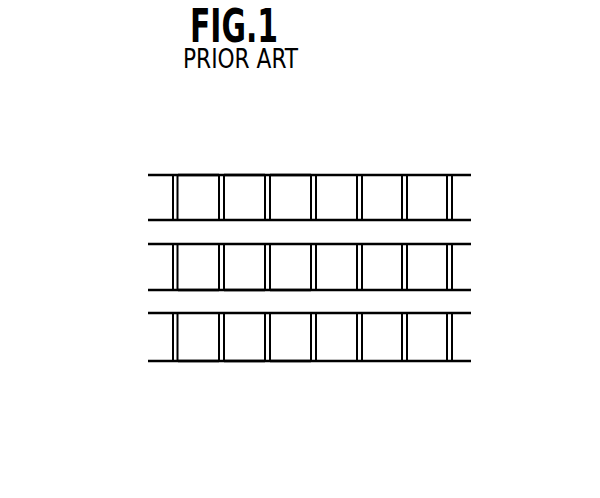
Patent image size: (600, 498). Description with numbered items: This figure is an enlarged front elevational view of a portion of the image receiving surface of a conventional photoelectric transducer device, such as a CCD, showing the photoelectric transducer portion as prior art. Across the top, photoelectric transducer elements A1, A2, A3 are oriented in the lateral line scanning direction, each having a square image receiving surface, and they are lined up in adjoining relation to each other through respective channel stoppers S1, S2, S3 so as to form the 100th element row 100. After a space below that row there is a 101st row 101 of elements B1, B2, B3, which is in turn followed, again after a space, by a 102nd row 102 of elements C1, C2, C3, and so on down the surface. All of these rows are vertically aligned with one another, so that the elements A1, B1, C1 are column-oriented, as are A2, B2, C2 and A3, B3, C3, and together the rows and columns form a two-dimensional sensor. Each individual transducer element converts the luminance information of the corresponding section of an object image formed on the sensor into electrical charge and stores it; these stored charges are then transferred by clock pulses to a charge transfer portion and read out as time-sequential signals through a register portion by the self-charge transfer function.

The 100th element row 100 is at (279, 197).
The 101st row of elements 101 is at (279, 267).
The 102nd row of elements 102 is at (279, 337).
The channel stopper S1 is at (223, 176).
The channel stopper S2 is at (267, 176).
The channel stopper S3 is at (375, 107).
The photoelectric transducer element A1 is at (198, 175).
The photoelectric transducer element A2 is at (240, 175).
The photoelectric transducer element A3 is at (350, 148).
The photoelectric transducer element B1 is at (187, 286).
The photoelectric transducer element B2 is at (232, 286).
The photoelectric transducer element B3 is at (277, 286).
The photoelectric transducer element C1 is at (190, 353).
The photoelectric transducer element C2 is at (238, 353).
The photoelectric transducer element C3 is at (287, 353).